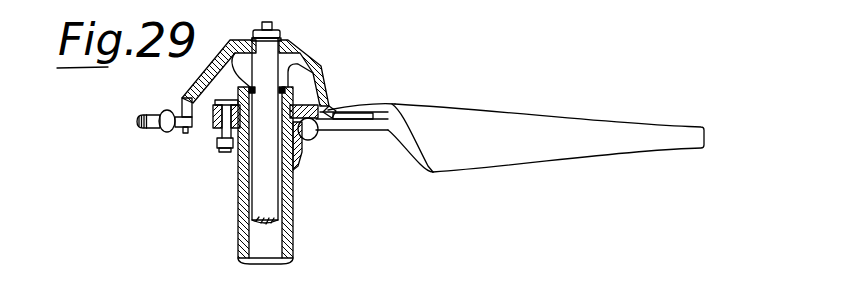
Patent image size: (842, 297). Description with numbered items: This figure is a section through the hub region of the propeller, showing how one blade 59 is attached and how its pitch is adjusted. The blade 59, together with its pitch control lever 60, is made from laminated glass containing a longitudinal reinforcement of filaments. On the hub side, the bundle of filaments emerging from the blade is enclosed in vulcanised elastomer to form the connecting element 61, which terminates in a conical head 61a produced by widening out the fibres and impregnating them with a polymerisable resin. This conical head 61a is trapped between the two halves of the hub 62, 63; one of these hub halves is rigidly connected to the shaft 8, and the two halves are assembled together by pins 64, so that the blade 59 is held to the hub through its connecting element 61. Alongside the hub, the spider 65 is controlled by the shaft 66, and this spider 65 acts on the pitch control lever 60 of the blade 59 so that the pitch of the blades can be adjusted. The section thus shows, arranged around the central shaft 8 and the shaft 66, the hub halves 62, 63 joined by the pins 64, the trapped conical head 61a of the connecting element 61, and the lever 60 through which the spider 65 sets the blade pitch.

The shaft 8 is at (246, 237).
The blade 59 is at (486, 113).
The pitch control lever 60 is at (371, 110).
The connecting element 61 is at (355, 122).
The conical head 61a is at (310, 128).
The hub half 62 is at (291, 107).
The hub half 63 is at (297, 139).
The pin 64 is at (221, 117).
The spider 65 is at (292, 61).
The shaft 66 is at (262, 169).